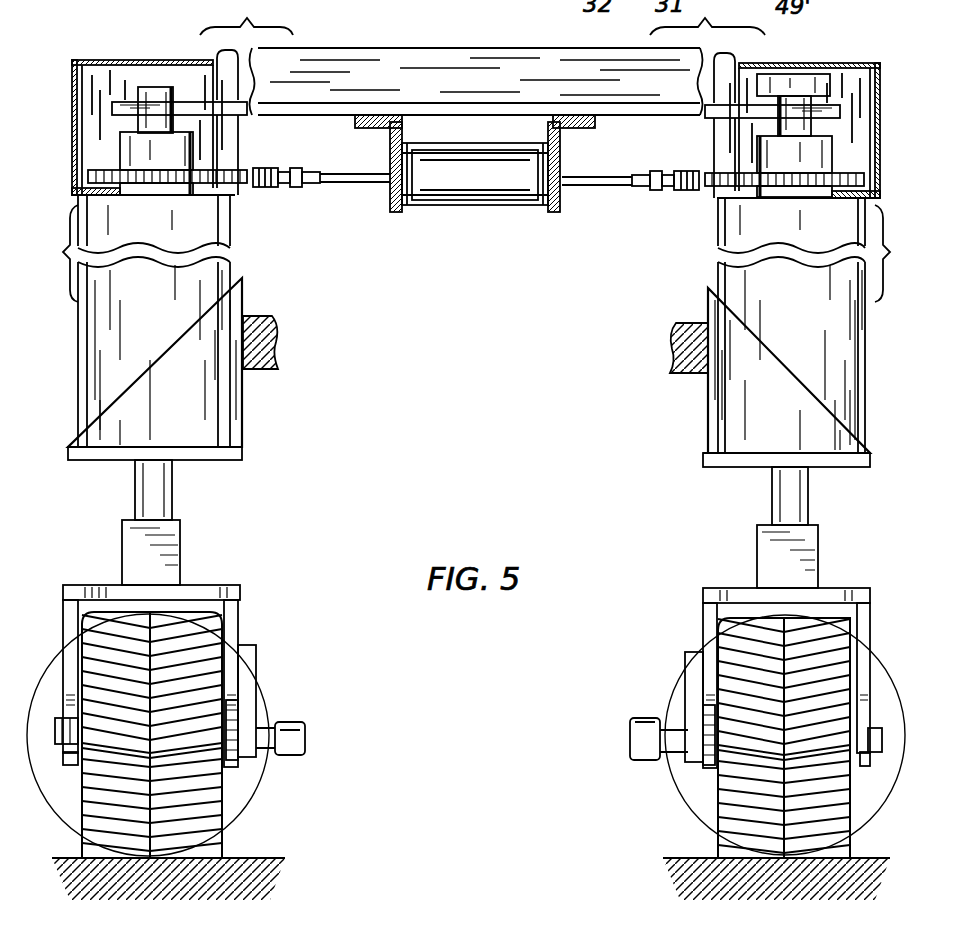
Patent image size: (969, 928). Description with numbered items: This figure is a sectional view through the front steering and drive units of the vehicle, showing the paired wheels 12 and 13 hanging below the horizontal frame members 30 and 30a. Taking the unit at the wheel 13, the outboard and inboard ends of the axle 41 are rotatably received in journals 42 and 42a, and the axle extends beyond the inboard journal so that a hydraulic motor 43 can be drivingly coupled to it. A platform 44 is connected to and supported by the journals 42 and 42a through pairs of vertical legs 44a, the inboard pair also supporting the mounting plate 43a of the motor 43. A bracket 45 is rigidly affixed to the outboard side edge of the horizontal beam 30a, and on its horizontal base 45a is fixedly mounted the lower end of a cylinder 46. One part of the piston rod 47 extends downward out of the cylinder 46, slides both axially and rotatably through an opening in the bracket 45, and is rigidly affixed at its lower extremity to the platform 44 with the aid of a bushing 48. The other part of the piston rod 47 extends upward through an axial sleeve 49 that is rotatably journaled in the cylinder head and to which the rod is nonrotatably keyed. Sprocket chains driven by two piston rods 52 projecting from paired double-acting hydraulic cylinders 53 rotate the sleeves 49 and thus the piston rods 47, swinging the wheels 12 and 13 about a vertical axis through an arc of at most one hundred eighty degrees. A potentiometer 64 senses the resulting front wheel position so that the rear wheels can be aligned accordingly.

The wheel 12 is at (725, 825).
The wheel 13 is at (205, 820).
The horizontal frame member 30 is at (688, 347).
The horizontal frame member 30a is at (280, 320).
The axle 41 is at (65, 728).
The bearing or journal 42 is at (68, 762).
The bearing or journal 42a is at (232, 770).
The hydraulic motor 43 is at (302, 727).
The mounting plate 43a is at (256, 652).
The platform 44 is at (208, 590).
The vertical legs 44a is at (240, 613).
The bracket 45 is at (230, 385).
The horizontal base 45a is at (108, 462).
The cylinder 46 is at (218, 292).
The piston rod 47 is at (160, 88).
The bushing 48 is at (180, 552).
The axial bushing or sleeve 49 is at (195, 143).
The piston rod 52 is at (357, 185).
The double-acting hydraulic cylinder 53 is at (470, 190).
The potentiometer 64 is at (832, 60).